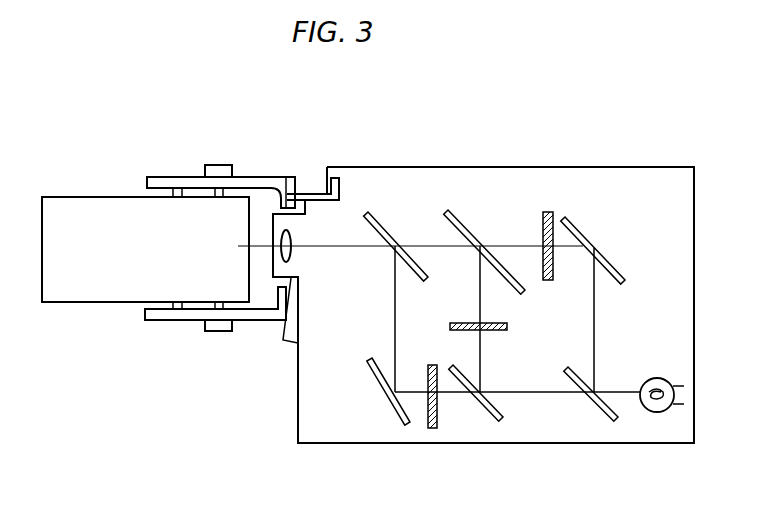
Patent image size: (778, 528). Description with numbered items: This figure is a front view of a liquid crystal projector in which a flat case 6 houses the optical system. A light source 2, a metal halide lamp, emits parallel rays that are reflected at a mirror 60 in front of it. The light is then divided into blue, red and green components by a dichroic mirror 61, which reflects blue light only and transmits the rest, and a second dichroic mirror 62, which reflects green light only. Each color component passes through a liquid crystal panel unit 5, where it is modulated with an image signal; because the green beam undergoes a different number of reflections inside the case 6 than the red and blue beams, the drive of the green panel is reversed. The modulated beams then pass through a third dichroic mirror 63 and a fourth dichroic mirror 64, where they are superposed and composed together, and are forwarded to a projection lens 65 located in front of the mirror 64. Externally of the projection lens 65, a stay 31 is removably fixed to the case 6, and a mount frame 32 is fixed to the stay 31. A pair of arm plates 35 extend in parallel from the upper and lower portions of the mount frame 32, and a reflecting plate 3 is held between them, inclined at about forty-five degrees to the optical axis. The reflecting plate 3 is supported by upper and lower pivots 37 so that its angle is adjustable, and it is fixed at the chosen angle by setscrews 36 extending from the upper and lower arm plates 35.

The light source 2 is at (664, 380).
The reflecting plate 3 is at (88, 282).
The liquid crystal panel unit 5 is at (548, 212).
The case 6 is at (630, 167).
The stay 31 is at (297, 192).
The mount frame 32 is at (271, 178).
The arm plate 35 is at (147, 184).
The setscrew 36 is at (220, 166).
The pivot 37 is at (170, 189).
The mirror 60 is at (610, 256).
The dichroic mirror 61 is at (602, 415).
The second dichroic mirror 62 is at (481, 410).
The third dichroic mirror 63 is at (462, 220).
The fourth dichroic mirror 64 is at (375, 214).
The projection lens 65 is at (292, 258).